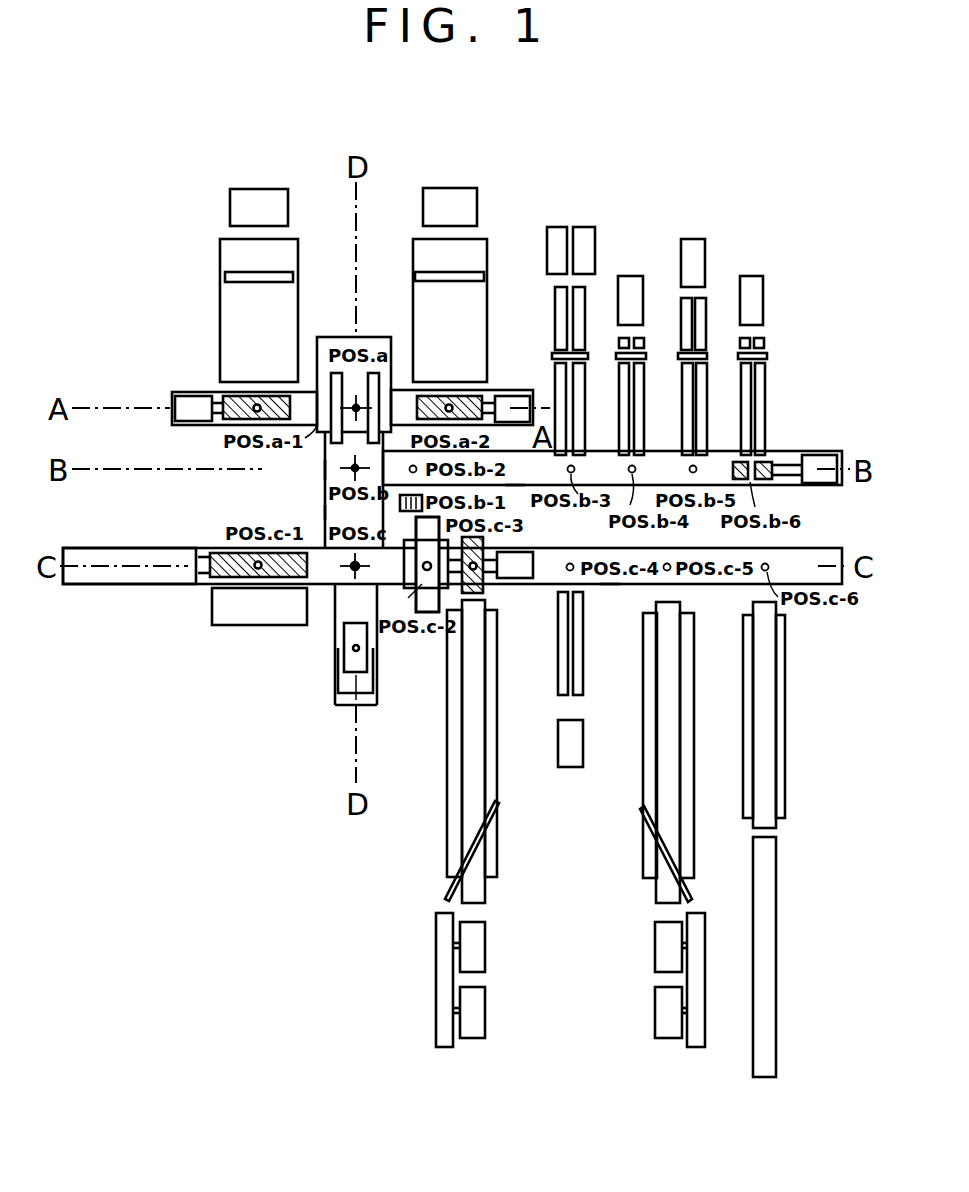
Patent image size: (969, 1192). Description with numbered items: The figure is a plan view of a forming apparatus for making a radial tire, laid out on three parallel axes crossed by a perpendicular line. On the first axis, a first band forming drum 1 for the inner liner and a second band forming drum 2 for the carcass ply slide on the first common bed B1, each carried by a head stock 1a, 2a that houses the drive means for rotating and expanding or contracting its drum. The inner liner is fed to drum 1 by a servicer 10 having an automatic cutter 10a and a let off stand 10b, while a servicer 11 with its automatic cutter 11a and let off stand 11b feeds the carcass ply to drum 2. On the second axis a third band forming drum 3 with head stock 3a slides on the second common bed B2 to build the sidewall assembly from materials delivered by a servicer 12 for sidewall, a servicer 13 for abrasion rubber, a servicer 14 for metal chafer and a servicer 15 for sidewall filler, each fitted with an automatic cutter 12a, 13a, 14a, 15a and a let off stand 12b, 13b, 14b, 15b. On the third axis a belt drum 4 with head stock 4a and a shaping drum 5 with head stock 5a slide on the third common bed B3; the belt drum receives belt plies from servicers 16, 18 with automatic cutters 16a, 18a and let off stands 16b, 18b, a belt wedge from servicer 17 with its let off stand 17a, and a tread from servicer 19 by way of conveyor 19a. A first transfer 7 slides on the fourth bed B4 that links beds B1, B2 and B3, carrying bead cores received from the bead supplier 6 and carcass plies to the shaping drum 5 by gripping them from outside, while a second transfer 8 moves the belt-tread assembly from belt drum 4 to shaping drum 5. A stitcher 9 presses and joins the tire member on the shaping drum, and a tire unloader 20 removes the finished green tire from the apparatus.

The first band forming drum 1 is at (243, 396).
The head stock 1a is at (192, 396).
The second band forming drum 2 is at (437, 396).
The head stock 2a is at (506, 396).
The third band forming drum 3 is at (770, 460).
The head stock 3a is at (817, 483).
The belt drum 4 is at (488, 590).
The head stock 4a is at (507, 578).
The shaping drum 5 is at (213, 552).
The head stock 5a is at (108, 555).
The bead supplier 6 is at (372, 568).
The first transfer 7 is at (340, 337).
The second transfer 8 is at (450, 593).
The stitcher 9 is at (212, 610).
The servicer 10 is at (220, 255).
The automatic cutter 10a is at (226, 277).
The let off stand 10b is at (230, 210).
The servicer 11 is at (413, 245).
The automatic cutter 11a is at (416, 274).
The let off stand 11b is at (455, 188).
The servicer 12 is at (588, 420).
The automatic cutter 12a is at (553, 353).
The let off stand 12b is at (573, 230).
The servicer 13 is at (645, 420).
The automatic cutter 13a is at (645, 352).
The let off stand 13b is at (625, 276).
The servicer 14 is at (707, 420).
The automatic cutter 14a is at (706, 350).
The let off stand 14b is at (694, 239).
The servicer 15 is at (768, 420).
The automatic cutter 15a is at (767, 353).
The let off stand 15b is at (764, 285).
The servicer 16 is at (498, 770).
The automatic cutter 16a is at (500, 810).
The let off stand 16b is at (486, 945).
The servicer 17 is at (584, 680).
The let off stand 17a is at (584, 740).
The servicer 18 is at (695, 733).
The automatic cutter 18a is at (672, 845).
The let off stand 18b is at (704, 943).
The servicer 19 is at (786, 733).
The conveyor 19a is at (778, 970).
The tire unloader 20 is at (335, 685).
The first common bed B1 is at (302, 472).
The second common bed B2 is at (517, 490).
The third common bed B3 is at (610, 584).
The fourth bed B4 is at (325, 512).